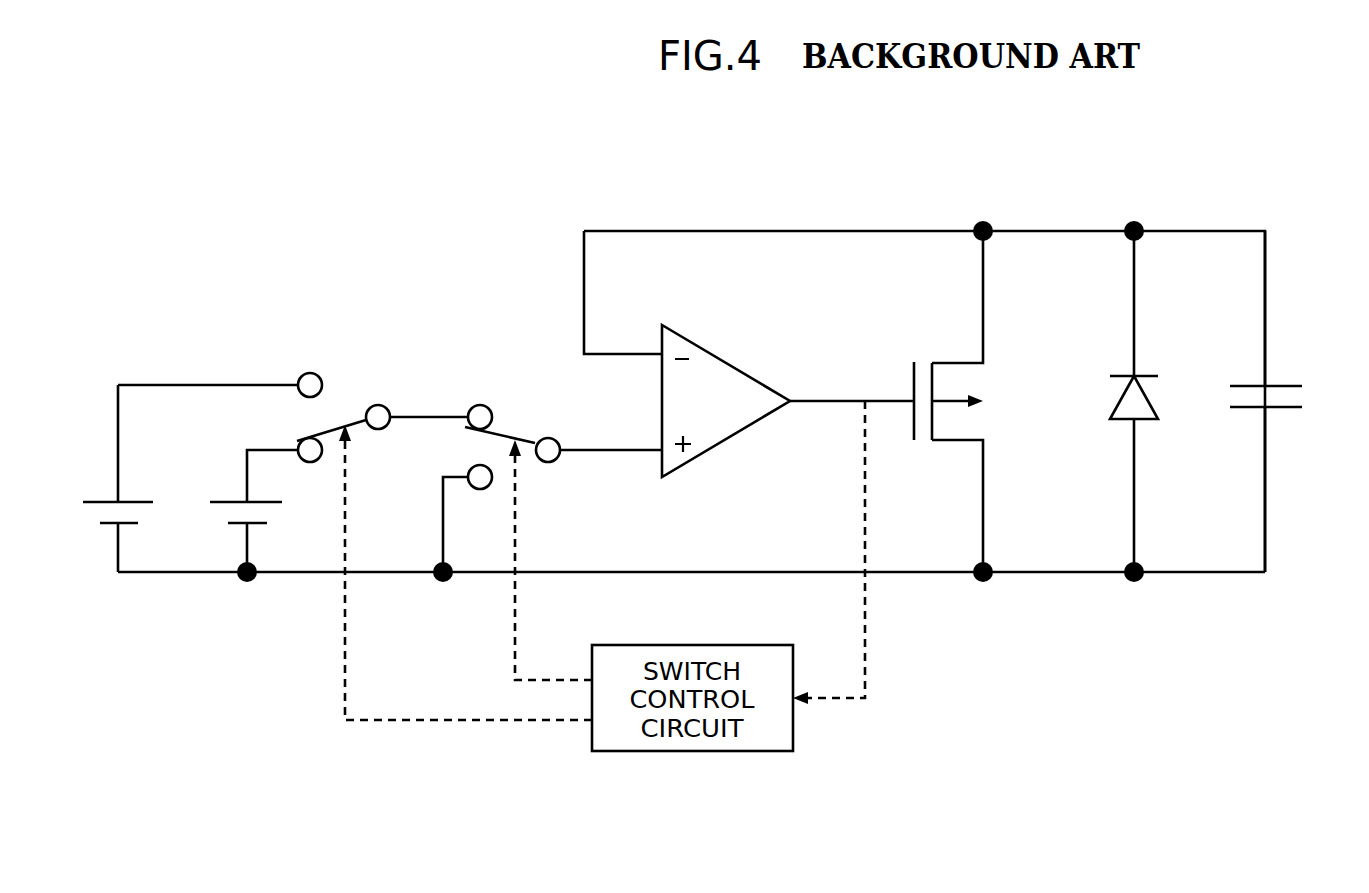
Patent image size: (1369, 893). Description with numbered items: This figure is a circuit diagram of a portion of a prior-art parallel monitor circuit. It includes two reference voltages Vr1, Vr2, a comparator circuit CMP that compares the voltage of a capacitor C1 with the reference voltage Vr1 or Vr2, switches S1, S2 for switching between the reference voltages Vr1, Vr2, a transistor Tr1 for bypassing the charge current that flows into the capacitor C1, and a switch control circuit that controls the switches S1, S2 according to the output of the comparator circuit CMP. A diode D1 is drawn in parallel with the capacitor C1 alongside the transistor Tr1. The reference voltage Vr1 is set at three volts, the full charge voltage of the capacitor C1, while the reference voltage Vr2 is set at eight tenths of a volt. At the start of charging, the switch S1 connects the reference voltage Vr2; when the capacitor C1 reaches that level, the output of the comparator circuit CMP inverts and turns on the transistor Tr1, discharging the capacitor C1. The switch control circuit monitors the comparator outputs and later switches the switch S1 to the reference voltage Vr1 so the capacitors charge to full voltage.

The switch S1 is at (444, 546).
The switch S2 is at (552, 536).
The reference voltage Vr1 is at (183, 478).
The reference voltage Vr2 is at (248, 511).
The comparator circuit CMP is at (788, 401).
The transistor Tr1 is at (888, 467).
The diode D1 is at (1156, 401).
The capacitor C1 is at (1287, 401).